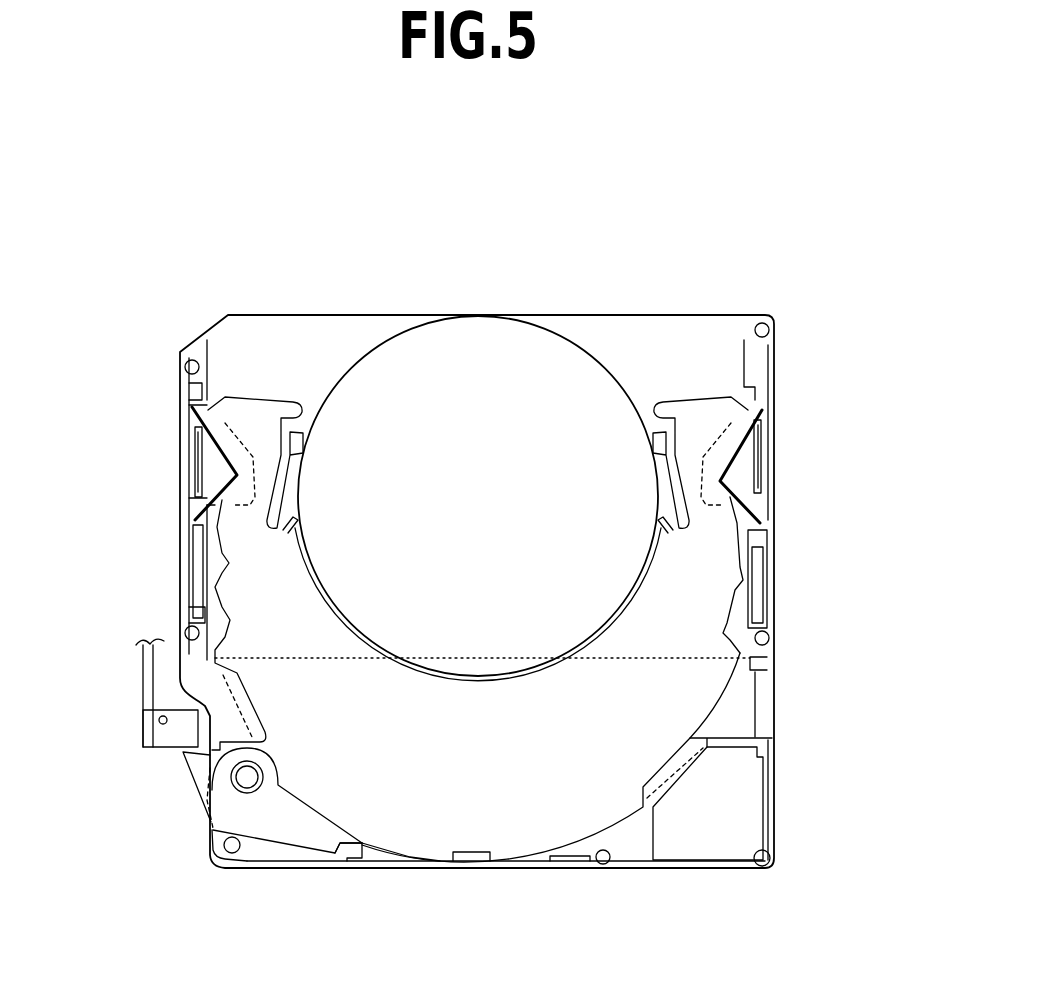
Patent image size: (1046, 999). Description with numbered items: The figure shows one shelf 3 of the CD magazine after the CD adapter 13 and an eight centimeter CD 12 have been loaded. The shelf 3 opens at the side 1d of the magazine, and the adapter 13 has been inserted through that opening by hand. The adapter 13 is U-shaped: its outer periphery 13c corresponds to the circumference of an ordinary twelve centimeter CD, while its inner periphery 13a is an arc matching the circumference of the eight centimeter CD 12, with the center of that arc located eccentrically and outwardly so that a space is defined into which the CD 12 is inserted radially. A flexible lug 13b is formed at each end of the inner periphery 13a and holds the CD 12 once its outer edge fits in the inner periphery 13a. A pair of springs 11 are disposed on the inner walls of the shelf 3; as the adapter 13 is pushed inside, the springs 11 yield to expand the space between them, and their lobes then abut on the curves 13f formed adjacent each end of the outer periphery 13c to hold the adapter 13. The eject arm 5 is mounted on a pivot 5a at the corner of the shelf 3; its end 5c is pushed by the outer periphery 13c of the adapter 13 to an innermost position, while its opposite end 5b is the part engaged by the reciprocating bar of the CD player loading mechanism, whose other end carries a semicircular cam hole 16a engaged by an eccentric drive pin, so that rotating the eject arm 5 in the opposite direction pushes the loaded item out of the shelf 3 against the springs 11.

The side 1d is at (317, 315).
The shelf 3 is at (513, 315).
The 8 cm CD 12 is at (523, 350).
The CD adapter 13 is at (660, 692).
The inner periphery 13a is at (514, 683).
The flexible lug 13b is at (298, 472).
The outer periphery 13c is at (383, 848).
The curve 13f is at (213, 505).
The spring 11 is at (215, 442).
The cam hole 16a is at (172, 737).
The eject arm 5 is at (268, 820).
The pivot 5a is at (250, 777).
The end 5b is at (183, 762).
The end 5c is at (343, 840).